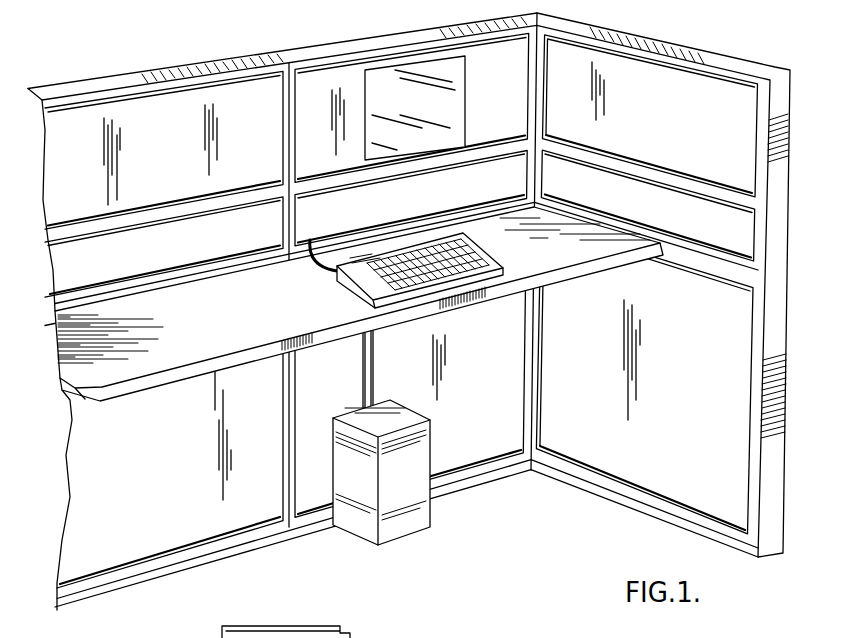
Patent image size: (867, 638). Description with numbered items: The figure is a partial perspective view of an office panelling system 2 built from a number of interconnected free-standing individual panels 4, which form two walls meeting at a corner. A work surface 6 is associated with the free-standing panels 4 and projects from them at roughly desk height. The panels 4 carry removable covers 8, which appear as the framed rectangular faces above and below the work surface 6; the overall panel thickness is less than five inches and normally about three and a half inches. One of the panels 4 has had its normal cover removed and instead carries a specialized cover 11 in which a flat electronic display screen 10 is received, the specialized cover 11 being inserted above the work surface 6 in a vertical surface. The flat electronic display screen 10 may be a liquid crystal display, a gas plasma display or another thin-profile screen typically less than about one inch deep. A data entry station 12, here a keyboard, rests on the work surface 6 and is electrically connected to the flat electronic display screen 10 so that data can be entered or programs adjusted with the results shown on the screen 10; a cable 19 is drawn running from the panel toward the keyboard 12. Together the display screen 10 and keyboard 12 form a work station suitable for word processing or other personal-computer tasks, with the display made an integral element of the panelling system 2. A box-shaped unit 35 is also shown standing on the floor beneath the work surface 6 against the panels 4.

The office panelling system 2 is at (266, 41).
The free-standing individual panel 4 is at (153, 512).
The work surface 6 is at (166, 352).
The removable cover 8 is at (134, 106).
The flat electronic display screen 10 is at (389, 78).
The specialized cover 11 is at (487, 120).
The data entry station 12 is at (347, 286).
The cable 19 is at (308, 262).
The computer unit 35 is at (385, 475).